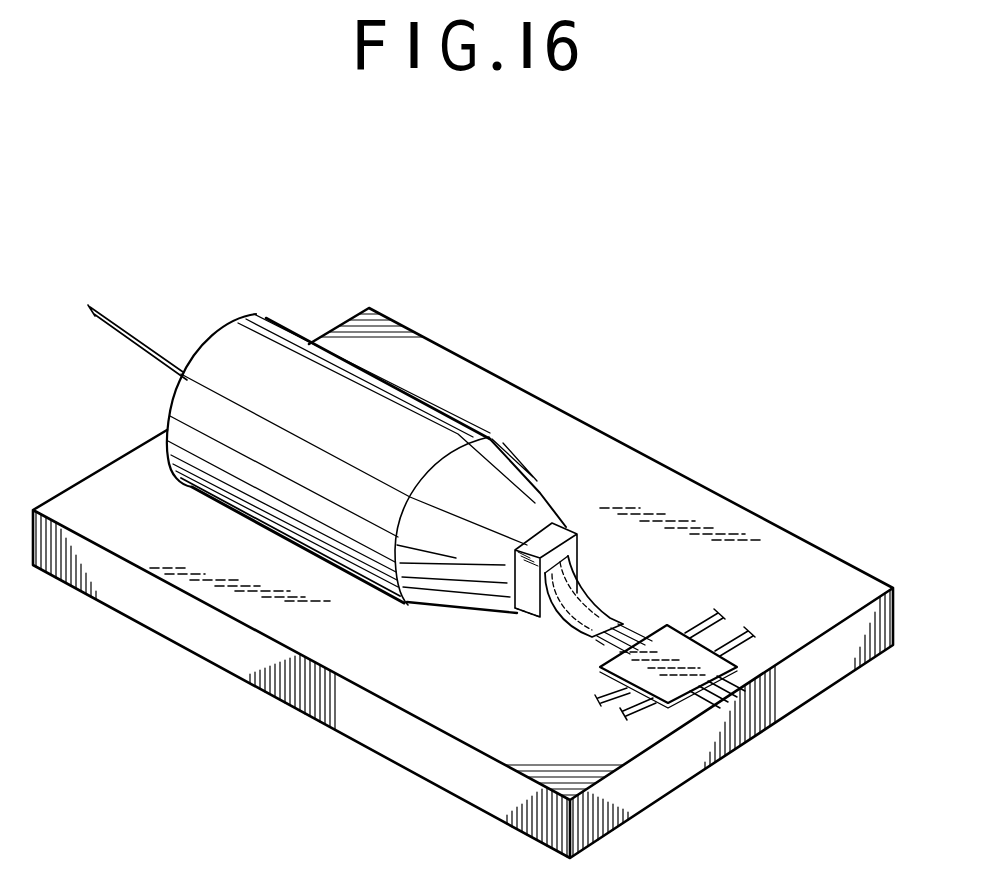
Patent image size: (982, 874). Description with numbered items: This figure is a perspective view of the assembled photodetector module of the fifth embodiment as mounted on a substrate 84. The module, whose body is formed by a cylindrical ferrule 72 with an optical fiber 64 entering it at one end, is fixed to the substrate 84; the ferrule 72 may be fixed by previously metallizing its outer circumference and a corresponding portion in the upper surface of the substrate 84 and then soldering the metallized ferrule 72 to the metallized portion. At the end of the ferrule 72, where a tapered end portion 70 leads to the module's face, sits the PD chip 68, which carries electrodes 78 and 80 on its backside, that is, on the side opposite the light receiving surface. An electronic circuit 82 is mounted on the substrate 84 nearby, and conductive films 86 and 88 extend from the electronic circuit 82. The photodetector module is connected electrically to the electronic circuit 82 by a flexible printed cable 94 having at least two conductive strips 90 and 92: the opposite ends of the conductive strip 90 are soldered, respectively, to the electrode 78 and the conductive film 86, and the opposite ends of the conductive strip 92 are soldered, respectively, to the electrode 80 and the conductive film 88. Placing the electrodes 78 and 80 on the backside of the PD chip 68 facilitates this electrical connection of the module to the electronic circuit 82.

The optical fiber 64 is at (143, 340).
The ferrule 72 is at (283, 380).
The tapered ferrule 70 is at (540, 493).
The PD chip 68 is at (575, 524).
The electrode 80 is at (582, 554).
The conductive strip 92 is at (612, 602).
The conductive strip 90 is at (553, 620).
The electrode 78 is at (505, 618).
The flexible printed cable 94 is at (600, 598).
The electronic circuit 82 is at (657, 684).
The conductive film 88 is at (600, 652).
The conductive film 86 is at (600, 652).
The substrate 84 is at (360, 668).